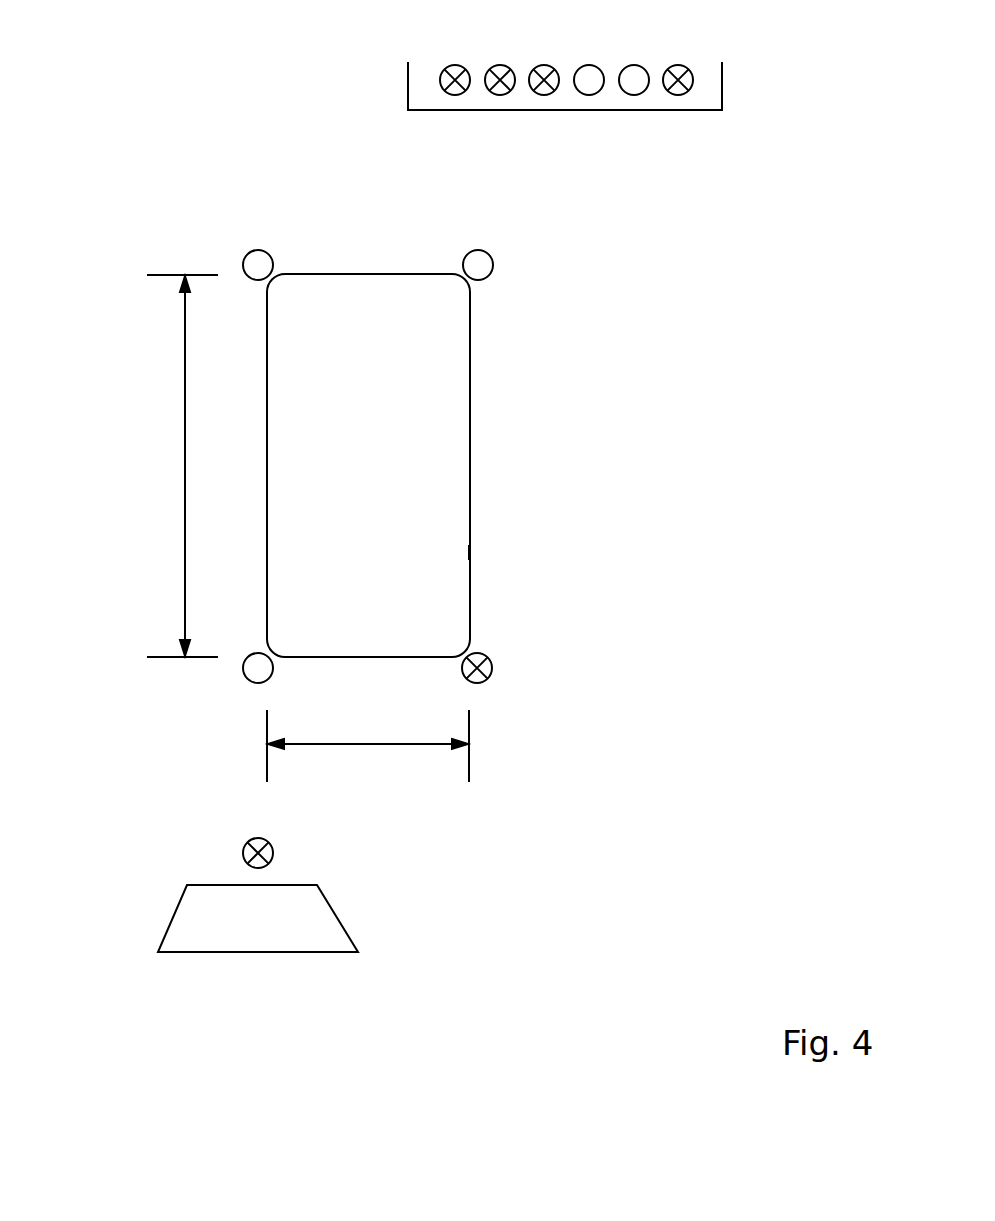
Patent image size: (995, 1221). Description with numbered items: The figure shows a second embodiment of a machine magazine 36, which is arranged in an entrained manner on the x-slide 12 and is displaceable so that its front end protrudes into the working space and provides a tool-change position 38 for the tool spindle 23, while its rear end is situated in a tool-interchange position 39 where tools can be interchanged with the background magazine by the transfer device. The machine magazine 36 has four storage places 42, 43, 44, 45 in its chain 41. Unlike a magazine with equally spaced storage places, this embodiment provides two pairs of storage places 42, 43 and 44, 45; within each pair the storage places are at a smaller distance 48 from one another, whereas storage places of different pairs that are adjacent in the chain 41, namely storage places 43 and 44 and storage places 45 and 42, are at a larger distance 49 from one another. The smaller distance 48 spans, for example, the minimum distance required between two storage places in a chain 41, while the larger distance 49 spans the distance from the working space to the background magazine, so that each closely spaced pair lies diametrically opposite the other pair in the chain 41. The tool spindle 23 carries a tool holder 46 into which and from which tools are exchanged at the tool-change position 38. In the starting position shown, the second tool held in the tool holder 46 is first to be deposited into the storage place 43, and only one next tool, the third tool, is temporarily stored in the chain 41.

The x-slide 12 is at (371, 466).
The tool spindle 23 is at (248, 926).
The machine magazine 36 is at (448, 465).
The tool-change position 38 is at (227, 886).
The tool-interchange position 39 is at (560, 227).
The chain 41 is at (469, 548).
The storage place 42 is at (489, 679).
The storage place 43 is at (248, 675).
The storage place 44 is at (249, 254).
The storage place 45 is at (469, 254).
The tool holder 46 is at (274, 847).
The smaller distance 48 is at (413, 745).
The larger distance 49 is at (185, 430).